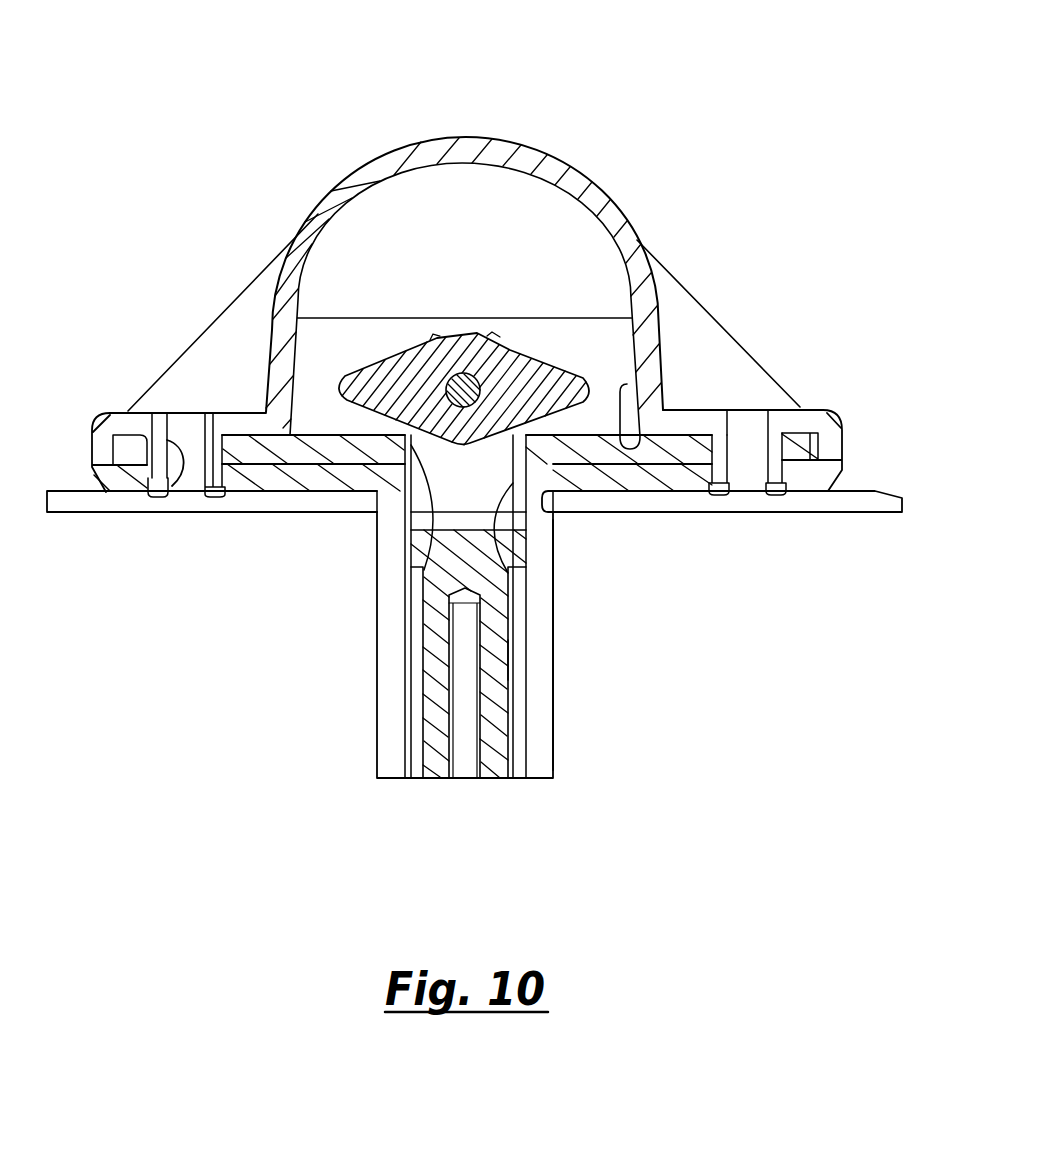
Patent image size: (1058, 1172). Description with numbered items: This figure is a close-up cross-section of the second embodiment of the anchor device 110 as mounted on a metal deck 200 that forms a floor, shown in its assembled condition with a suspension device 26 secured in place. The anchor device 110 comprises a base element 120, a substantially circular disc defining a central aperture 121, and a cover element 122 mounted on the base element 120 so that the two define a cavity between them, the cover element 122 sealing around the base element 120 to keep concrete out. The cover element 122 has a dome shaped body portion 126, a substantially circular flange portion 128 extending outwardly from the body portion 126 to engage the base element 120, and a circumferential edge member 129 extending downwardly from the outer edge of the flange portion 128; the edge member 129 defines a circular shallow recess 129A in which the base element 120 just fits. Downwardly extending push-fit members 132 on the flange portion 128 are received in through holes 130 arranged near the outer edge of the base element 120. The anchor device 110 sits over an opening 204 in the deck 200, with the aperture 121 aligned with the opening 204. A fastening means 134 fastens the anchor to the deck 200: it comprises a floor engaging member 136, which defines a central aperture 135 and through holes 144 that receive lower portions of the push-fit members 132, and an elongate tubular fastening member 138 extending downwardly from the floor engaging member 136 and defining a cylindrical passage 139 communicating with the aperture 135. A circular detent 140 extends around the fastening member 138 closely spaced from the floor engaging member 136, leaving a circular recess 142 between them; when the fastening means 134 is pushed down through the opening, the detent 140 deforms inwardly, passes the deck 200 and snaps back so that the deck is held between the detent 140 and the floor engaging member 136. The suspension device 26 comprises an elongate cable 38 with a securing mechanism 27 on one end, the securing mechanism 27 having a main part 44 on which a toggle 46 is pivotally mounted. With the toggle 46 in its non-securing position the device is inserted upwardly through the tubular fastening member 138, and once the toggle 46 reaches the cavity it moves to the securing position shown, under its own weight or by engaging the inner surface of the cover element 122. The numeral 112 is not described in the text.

The anchor device 110 is at (381, 146).
The dome wall 112 is at (484, 126).
The cover element 122 is at (311, 203).
The dome shaped body portion 126 is at (592, 176).
The circular shallow recess 129A is at (625, 425).
The toggle 46 is at (545, 355).
The flange portion 128 is at (692, 425).
The circumferential edge member 129 is at (842, 448).
The through holes 130 is at (185, 422).
The push-fit members 132 is at (209, 420).
The floor engaging member 136 is at (122, 480).
The through holes 144 is at (178, 485).
The base element 120 is at (262, 460).
The detent 140 is at (523, 517).
The circular recess 142 is at (345, 505).
The metal deck 200 is at (70, 528).
The fastening means 134 is at (368, 670).
The aperture 121 is at (440, 542).
The central aperture 135 is at (507, 573).
The opening 204 is at (520, 530).
The main part 44 is at (433, 692).
The securing mechanism 27 is at (525, 659).
The elongate cable 38 is at (465, 775).
The cylindrical passage 139 is at (493, 780).
The suspension device 26 is at (429, 787).
The tubular fastening member 138 is at (545, 702).